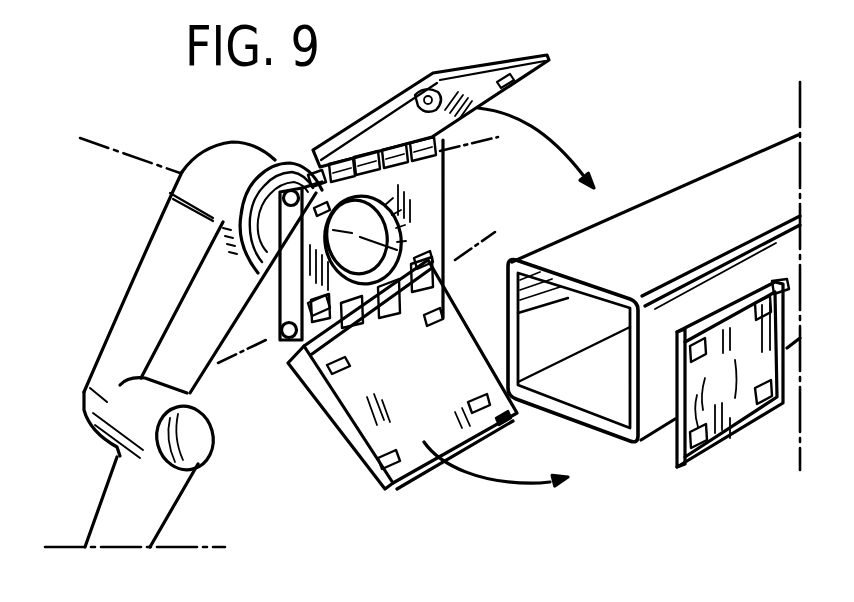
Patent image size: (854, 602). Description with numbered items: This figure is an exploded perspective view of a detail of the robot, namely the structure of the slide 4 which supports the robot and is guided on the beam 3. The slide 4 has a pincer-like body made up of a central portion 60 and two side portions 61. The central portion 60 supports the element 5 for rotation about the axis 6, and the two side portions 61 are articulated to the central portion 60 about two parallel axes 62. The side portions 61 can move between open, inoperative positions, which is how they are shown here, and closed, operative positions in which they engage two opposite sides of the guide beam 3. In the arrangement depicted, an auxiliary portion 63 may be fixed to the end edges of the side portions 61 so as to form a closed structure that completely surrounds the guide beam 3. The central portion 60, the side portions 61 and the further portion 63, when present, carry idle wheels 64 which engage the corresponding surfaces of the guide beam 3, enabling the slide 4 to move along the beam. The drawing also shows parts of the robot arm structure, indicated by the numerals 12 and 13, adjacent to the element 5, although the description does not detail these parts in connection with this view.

The guide beam 3 is at (717, 188).
The slide 4 is at (558, 141).
The element 5 is at (282, 157).
The axis 6 is at (158, 163).
The upper arm 12 is at (157, 267).
The lower arm 13 is at (167, 493).
The central portion 60 is at (441, 205).
The side portions 61 is at (495, 67).
The parallel axes 62 is at (497, 137).
The auxiliary portion 63 is at (703, 390).
The idle wheels 64 is at (420, 135).